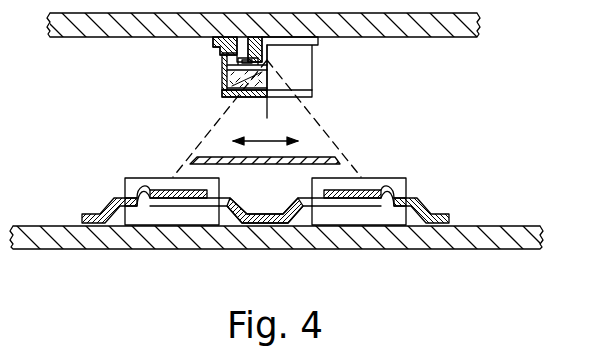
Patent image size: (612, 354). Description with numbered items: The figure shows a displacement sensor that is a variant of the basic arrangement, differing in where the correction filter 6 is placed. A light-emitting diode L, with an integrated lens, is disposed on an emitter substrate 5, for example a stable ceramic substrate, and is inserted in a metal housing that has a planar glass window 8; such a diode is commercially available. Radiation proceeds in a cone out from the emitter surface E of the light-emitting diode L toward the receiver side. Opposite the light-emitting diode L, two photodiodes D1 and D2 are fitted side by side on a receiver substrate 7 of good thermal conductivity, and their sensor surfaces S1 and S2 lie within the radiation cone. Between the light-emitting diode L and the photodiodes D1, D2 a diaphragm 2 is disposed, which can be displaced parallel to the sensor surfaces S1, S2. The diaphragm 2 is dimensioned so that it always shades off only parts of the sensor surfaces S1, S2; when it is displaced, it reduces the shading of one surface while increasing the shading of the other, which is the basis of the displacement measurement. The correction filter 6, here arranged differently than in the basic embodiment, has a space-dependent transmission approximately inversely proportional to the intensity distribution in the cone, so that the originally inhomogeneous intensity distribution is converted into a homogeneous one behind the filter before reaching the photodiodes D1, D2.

The emitter substrate 5 is at (445, 22).
The emitter surface E is at (265, 63).
The planar glass window 8 is at (228, 79).
The light-emitting diode L is at (292, 68).
The correction filter 6 is at (300, 93).
The diaphragm 2 is at (313, 158).
The photodiode D1 is at (128, 182).
The photodiode D2 is at (398, 184).
The sensor surface S1 is at (207, 191).
The sensor surface S2 is at (322, 191).
The receiver substrate 7 is at (497, 235).